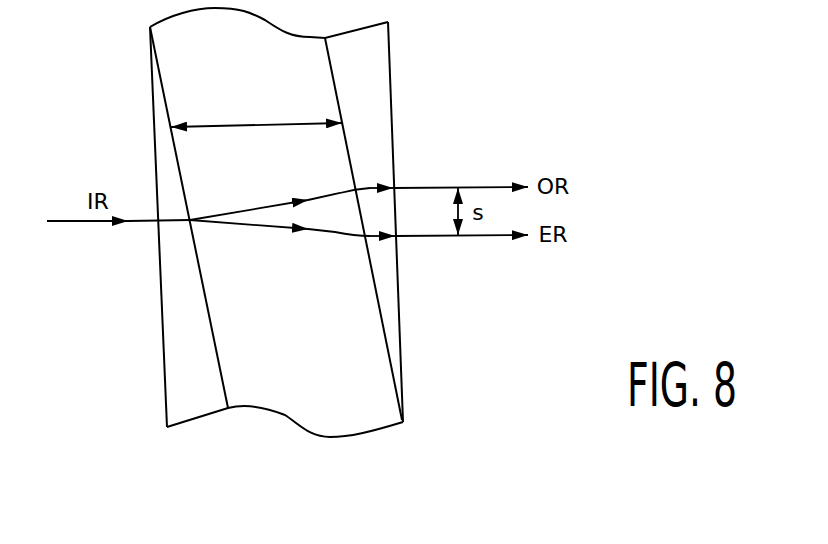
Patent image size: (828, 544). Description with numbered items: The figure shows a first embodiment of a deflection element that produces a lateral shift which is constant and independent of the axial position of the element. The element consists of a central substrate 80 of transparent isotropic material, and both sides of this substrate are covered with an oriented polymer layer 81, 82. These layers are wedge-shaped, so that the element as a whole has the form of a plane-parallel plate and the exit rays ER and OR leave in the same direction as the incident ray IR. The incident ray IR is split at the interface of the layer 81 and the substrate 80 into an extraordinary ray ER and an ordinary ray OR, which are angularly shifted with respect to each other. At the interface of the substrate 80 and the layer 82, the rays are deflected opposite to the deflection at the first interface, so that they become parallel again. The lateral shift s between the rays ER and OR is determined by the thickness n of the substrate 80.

The central substrate 80 is at (335, 417).
The oriented polymer layer 81 is at (198, 398).
The oriented polymer layer 82 is at (395, 333).